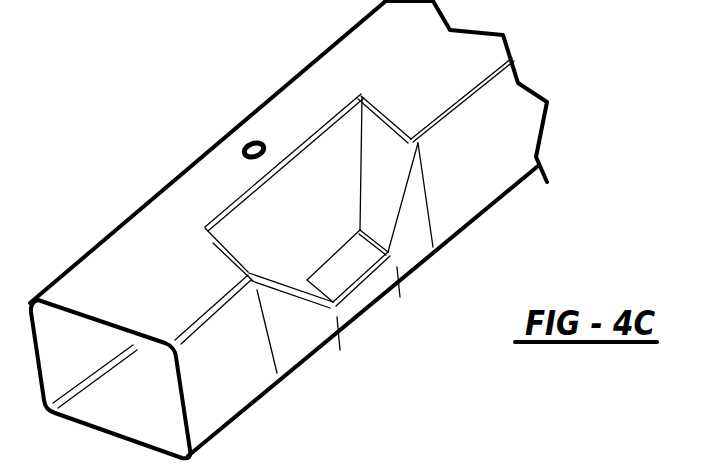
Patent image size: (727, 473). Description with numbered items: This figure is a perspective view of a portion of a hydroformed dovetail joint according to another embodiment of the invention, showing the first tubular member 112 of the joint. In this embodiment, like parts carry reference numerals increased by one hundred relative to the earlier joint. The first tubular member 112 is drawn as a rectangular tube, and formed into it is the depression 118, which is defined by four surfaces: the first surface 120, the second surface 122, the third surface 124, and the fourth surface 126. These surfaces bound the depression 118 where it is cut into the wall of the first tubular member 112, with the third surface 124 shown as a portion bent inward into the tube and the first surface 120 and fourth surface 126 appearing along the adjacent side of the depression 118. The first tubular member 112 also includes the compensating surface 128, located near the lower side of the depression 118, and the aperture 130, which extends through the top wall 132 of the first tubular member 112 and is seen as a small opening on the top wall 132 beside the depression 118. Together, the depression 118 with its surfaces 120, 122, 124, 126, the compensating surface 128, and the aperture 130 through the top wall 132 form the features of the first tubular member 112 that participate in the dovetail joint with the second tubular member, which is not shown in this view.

The first tubular member 112 is at (145, 205).
The depression 118 is at (337, 228).
The first surface 120 is at (346, 271).
The second surface 122 is at (298, 190).
The third surface 124 is at (380, 190).
The fourth surface 126 is at (282, 276).
The compensating surface 128 is at (357, 308).
The aperture 130 is at (243, 143).
The top wall 132 is at (208, 182).